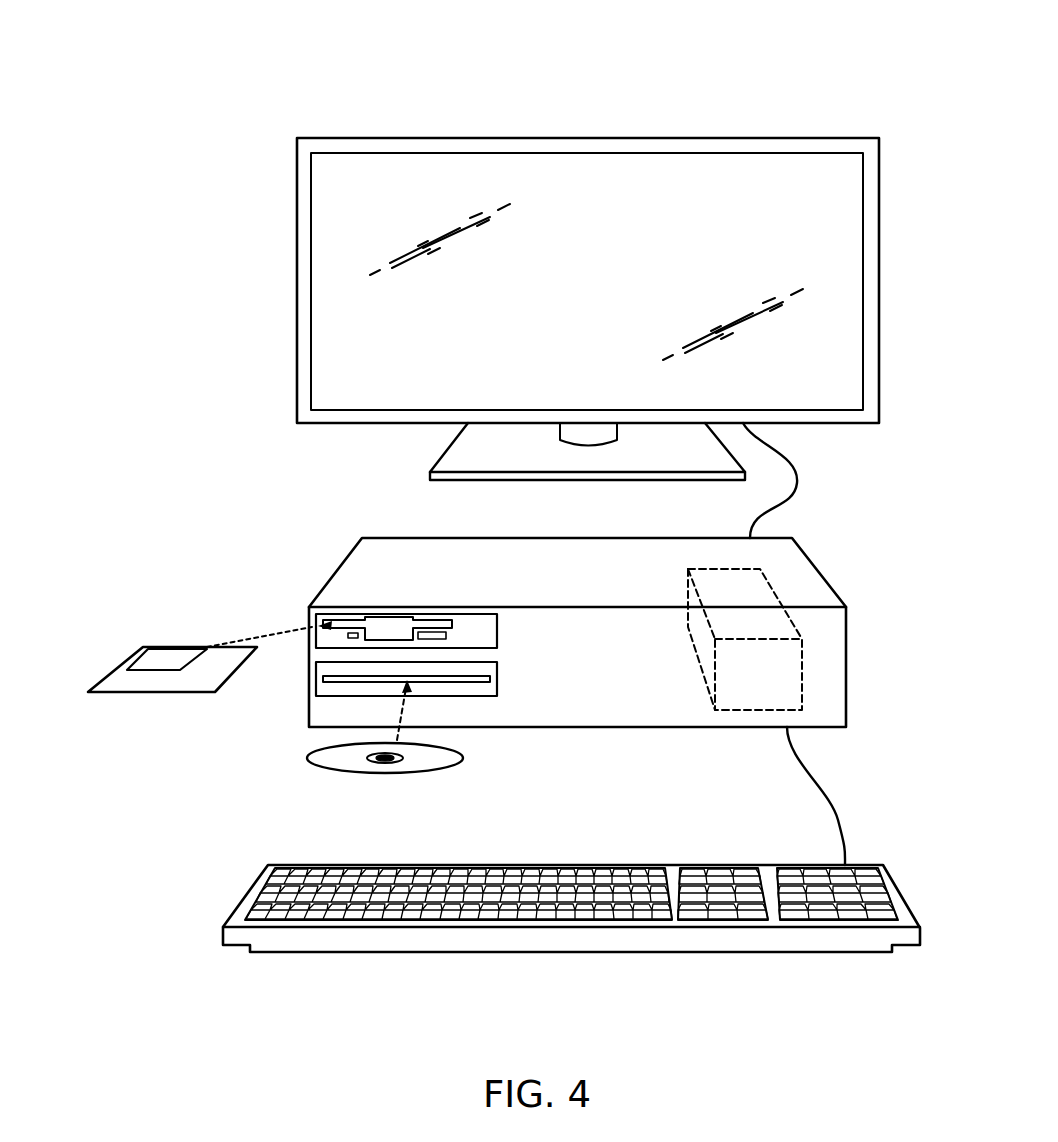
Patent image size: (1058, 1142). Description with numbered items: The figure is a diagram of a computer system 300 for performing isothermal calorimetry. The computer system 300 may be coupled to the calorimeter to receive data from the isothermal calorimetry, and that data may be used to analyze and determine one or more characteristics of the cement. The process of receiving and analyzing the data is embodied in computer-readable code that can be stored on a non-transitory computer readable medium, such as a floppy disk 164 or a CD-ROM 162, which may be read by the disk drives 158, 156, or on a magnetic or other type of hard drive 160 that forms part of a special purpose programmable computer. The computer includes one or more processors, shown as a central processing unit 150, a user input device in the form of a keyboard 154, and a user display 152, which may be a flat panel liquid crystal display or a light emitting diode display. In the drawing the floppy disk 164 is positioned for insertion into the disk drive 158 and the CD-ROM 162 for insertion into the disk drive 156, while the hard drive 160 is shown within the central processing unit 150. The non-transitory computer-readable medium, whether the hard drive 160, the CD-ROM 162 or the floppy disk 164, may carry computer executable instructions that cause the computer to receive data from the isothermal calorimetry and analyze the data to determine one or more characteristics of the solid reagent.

The computer system 300 is at (282, 62).
The central processing unit 150 is at (846, 658).
The user display 152 is at (296, 295).
The keyboard 154 is at (240, 899).
The disk drive 156 is at (498, 678).
The disk drive 158 is at (498, 630).
The hard drive 160 is at (696, 650).
The CD-ROM 162 is at (463, 757).
The floppy disk 164 is at (128, 661).